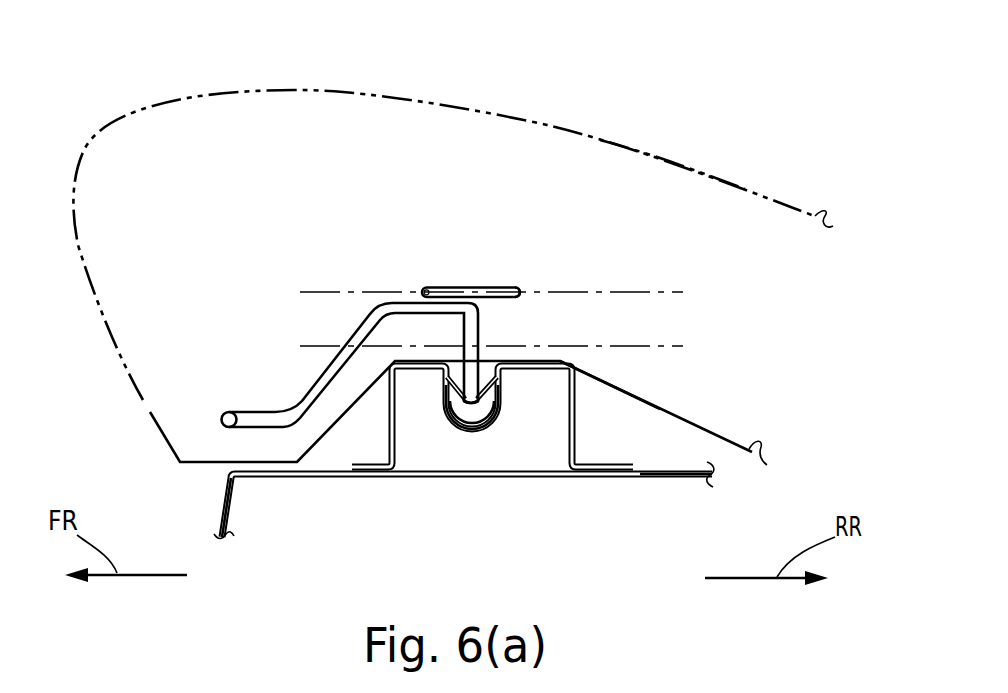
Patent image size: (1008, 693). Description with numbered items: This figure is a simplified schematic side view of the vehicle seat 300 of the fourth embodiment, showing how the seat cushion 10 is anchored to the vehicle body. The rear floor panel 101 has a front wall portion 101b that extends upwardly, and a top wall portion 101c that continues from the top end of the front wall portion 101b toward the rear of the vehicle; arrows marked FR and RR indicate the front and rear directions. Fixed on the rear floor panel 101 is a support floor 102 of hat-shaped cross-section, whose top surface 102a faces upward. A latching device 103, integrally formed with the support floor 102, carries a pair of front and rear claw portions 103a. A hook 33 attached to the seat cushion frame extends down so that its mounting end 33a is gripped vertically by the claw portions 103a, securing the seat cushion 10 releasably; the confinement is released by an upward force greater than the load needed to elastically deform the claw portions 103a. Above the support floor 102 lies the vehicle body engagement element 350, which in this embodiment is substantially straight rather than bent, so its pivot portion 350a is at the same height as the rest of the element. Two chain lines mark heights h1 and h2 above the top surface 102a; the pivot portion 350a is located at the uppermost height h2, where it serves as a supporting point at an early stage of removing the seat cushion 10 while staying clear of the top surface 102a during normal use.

The seat cushion 10 is at (472, 107).
The vehicle seat 300 is at (660, 140).
The vehicle body engagement element 350 is at (471, 278).
The pivot portion 350a is at (520, 287).
The hook 33 is at (310, 371).
The mounting end 33a is at (467, 406).
The rear floor panel 101 is at (688, 464).
The front wall portion 101b is at (220, 508).
The top wall portion 101c is at (650, 472).
The support floor 102 is at (384, 433).
The top surface 102a is at (562, 362).
The latching device 103 is at (494, 438).
The claw portions 103a is at (500, 393).
The height h1 is at (675, 346).
The height h2 is at (650, 292).